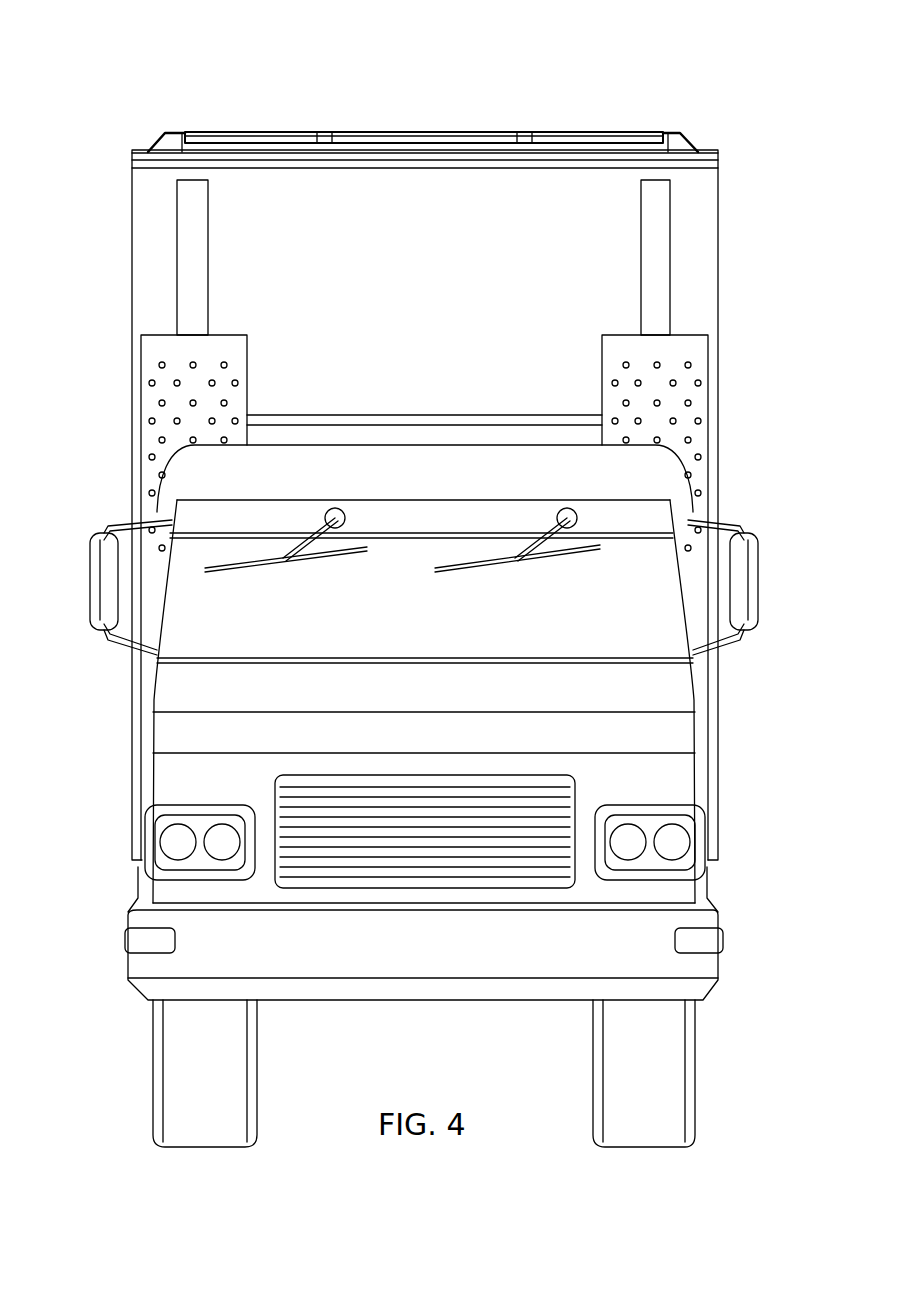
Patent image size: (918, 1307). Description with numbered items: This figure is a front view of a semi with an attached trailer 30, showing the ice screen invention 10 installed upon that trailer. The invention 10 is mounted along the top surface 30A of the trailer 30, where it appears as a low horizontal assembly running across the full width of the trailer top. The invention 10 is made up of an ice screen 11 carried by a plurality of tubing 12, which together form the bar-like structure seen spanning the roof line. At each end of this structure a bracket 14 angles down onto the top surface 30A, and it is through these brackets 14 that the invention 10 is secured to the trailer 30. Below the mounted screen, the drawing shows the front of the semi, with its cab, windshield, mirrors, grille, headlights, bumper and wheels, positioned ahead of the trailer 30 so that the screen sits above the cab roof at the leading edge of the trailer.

The ice screen 10 is at (123, 96).
The ice screen 11 is at (288, 135).
The plurality of tubing 12 is at (540, 137).
The plurality of brackets 14 is at (693, 140).
The trailer 30 is at (138, 275).
The top surface 30A is at (448, 173).